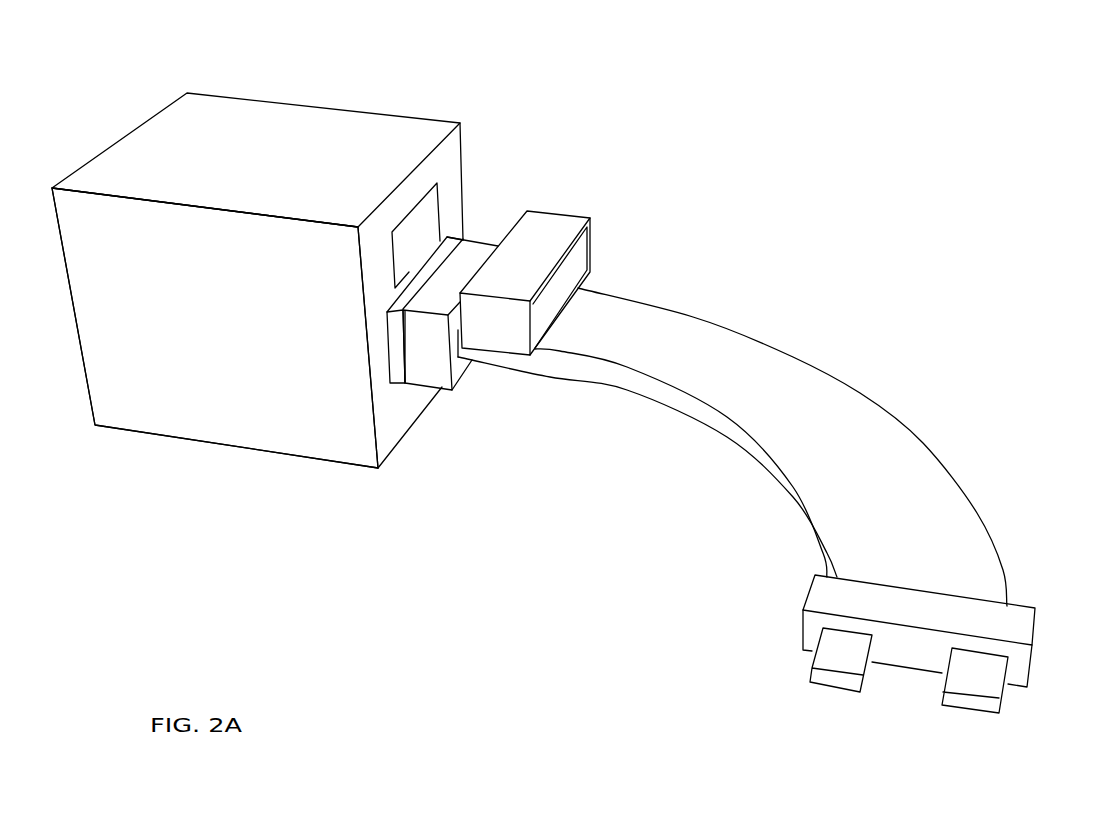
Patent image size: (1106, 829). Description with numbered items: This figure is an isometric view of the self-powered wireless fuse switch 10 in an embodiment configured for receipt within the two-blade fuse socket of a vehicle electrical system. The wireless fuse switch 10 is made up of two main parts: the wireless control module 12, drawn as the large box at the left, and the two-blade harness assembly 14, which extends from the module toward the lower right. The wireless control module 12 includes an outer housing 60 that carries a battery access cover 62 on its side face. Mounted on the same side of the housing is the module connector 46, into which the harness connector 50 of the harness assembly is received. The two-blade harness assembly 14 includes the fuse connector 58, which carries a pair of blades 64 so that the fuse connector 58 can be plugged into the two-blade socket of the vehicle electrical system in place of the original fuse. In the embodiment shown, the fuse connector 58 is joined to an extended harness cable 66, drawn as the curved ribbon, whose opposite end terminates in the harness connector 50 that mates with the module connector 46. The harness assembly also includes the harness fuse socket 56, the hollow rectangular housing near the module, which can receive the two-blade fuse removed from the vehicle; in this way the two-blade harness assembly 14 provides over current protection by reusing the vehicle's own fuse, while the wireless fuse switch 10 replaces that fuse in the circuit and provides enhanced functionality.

The wireless fuse switch 10 is at (566, 382).
The wireless control module 12 is at (308, 105).
The two-blade harness assembly 14 is at (745, 278).
The module connector 46 is at (392, 357).
The harness connector 50 is at (430, 372).
The harness fuse socket 56 is at (557, 227).
The fuse connector 58 is at (998, 623).
The outer housing 60 is at (195, 425).
The battery access cover 62 is at (422, 228).
The pair of blades 64 is at (828, 654).
The extended harness cable 66 is at (836, 380).